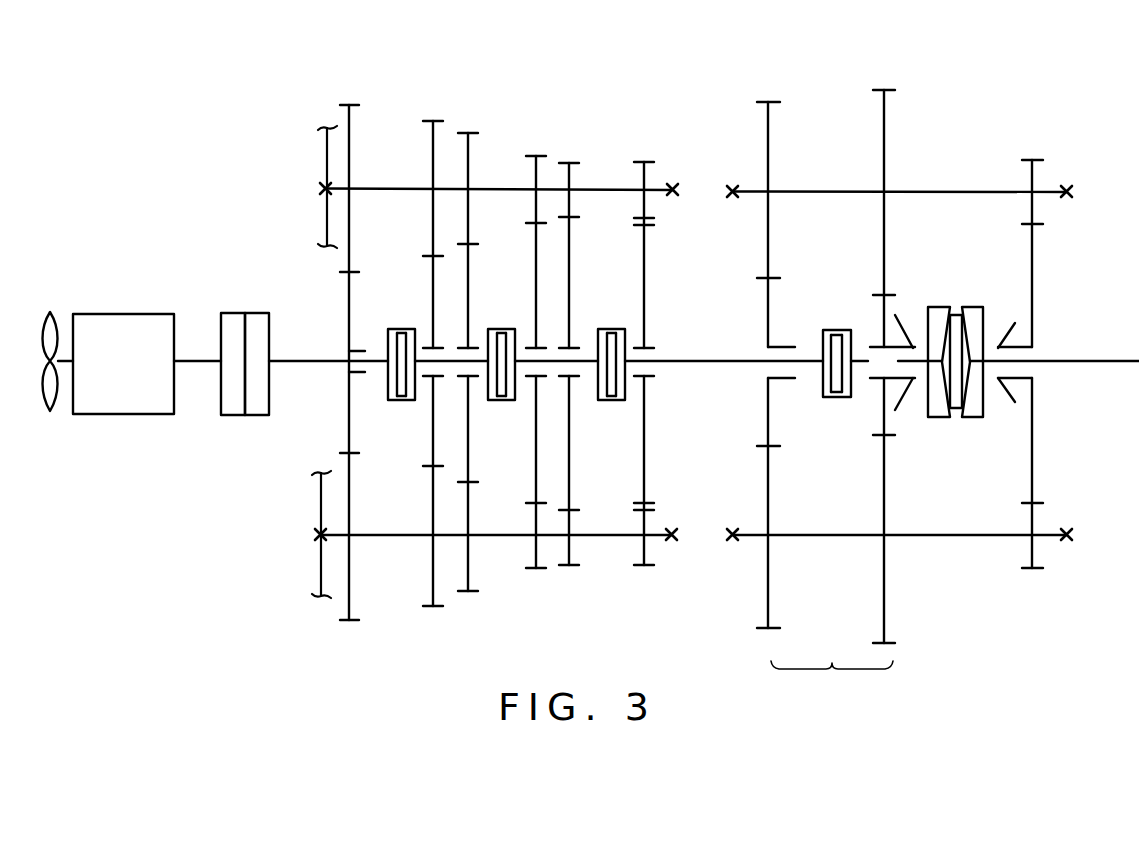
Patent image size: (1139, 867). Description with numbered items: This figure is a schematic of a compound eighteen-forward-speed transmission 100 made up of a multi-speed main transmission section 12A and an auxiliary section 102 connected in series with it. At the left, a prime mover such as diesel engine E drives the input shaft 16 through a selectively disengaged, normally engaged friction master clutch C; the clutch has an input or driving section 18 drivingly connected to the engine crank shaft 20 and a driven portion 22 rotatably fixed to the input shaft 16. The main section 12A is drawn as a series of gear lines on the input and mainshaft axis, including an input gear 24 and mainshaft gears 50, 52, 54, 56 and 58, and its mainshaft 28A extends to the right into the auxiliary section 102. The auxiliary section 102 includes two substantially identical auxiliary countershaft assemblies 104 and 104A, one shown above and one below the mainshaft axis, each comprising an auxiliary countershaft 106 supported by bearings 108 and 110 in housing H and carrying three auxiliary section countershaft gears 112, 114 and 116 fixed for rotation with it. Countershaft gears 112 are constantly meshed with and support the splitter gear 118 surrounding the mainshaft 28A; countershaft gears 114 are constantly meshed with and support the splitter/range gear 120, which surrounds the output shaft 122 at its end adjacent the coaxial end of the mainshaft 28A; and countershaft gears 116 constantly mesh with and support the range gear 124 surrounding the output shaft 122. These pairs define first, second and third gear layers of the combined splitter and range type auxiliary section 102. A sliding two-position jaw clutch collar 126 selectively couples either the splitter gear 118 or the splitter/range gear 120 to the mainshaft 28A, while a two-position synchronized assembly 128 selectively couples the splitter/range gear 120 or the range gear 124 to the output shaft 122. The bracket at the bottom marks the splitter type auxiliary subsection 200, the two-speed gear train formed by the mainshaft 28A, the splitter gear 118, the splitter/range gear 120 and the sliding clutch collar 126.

The diesel engine E is at (109, 363).
The friction master clutch C is at (245, 364).
The housing H is at (325, 160).
The input shaft 16 is at (313, 358).
The input or driving section 18 is at (236, 405).
The engine crank shaft 20 is at (192, 360).
The driven portion 22 is at (253, 405).
The input gear 24 is at (350, 310).
The multi-speed main transmission section 12A is at (527, 108).
The mainshaft 28A is at (705, 363).
The mainshaft gear 50 is at (430, 419).
The mainshaft gear 52 is at (468, 310).
The mainshaft gear 54 is at (533, 419).
The mainshaft gear 56 is at (569, 318).
The mainshaft gear 58 is at (642, 419).
The compound transmission 100 is at (689, 76).
The auxiliary section 102 is at (955, 68).
The auxiliary countershaft assembly 104 is at (955, 183).
The auxiliary countershaft assembly 104A is at (915, 567).
The auxiliary countershaft 106 is at (808, 191).
The bearing 108 is at (732, 186).
The bearing 110 is at (1073, 190).
The auxiliary section countershaft gear 112 is at (768, 137).
The auxiliary section countershaft gear 114 is at (884, 137).
The auxiliary section countershaft gear 116 is at (1030, 172).
The auxiliary section splitter gear 118 is at (768, 313).
The auxiliary section splitter/range gear 120 is at (884, 308).
The output shaft 122 is at (1095, 361).
The auxiliary section range gear 124 is at (1032, 293).
The sliding two position jaw clutch collar 126 is at (828, 396).
The two position synchronized assembly 128 is at (938, 296).
The splitter type auxiliary subsection 200 is at (832, 679).